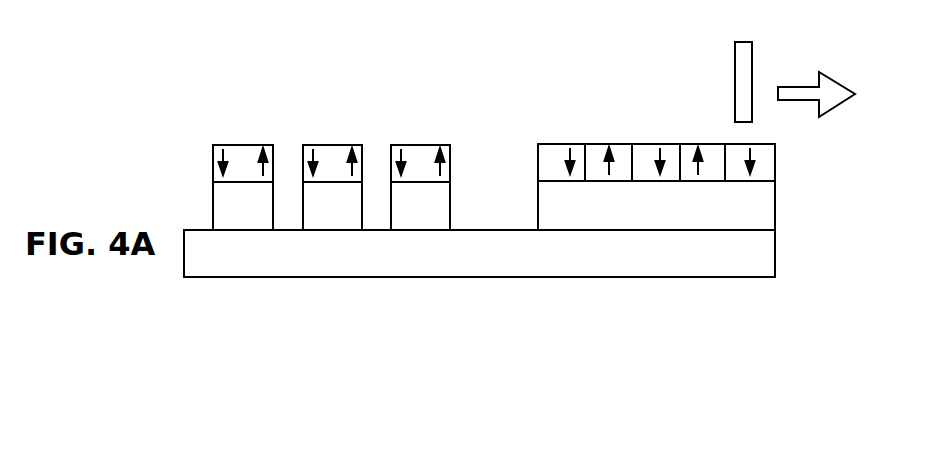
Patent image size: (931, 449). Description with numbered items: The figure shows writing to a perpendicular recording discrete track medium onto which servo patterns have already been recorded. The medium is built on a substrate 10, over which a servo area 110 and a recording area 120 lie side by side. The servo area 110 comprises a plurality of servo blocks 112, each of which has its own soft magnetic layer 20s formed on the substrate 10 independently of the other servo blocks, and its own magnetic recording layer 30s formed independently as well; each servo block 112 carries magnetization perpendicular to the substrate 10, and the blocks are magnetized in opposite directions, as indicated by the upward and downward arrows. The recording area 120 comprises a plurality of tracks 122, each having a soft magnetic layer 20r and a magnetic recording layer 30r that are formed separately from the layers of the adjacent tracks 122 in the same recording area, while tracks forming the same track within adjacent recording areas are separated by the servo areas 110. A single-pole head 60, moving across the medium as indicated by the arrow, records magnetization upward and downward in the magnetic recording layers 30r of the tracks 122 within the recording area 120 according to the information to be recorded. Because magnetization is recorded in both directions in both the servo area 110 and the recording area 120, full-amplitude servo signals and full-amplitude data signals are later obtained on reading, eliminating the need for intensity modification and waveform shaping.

The substrate 10 is at (761, 248).
The soft magnetic layer 20s is at (233, 222).
The magnetic recording layer 30s is at (330, 160).
The soft magnetic layer 20r is at (761, 210).
The magnetic recording layer 30r is at (761, 167).
The servo area 110 is at (349, 252).
The recording area 120 is at (692, 249).
The servo block 112 is at (418, 126).
The track 122 is at (560, 124).
The single-pole head 60 is at (752, 49).